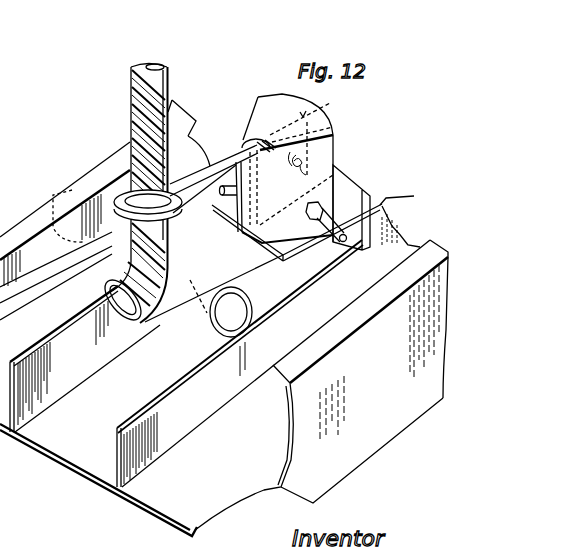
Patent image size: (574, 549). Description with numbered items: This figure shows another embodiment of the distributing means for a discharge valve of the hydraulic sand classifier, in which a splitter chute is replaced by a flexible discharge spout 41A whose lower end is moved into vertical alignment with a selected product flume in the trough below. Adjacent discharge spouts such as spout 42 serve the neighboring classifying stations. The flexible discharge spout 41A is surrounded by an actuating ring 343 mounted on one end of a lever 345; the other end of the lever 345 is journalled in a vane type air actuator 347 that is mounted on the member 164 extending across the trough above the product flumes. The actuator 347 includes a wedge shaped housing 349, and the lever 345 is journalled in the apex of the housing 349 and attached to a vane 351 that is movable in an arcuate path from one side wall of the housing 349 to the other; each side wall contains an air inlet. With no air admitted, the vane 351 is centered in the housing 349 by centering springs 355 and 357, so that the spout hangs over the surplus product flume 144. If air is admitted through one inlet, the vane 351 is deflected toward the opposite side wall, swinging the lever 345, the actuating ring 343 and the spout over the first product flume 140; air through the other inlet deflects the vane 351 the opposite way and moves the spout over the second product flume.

The flexible discharge spout 41A is at (160, 92).
The actuating ring 343 is at (125, 182).
The centering spring 355 is at (260, 118).
The vane type air actuator 347 is at (275, 87).
The vane 351 is at (322, 115).
The centering spring 357 is at (333, 140).
The wedge shaped housing 349 is at (333, 168).
The member 164 is at (353, 200).
The lever 345 is at (238, 288).
The discharge spout 42 is at (47, 289).
The surplus product flume 144 is at (165, 372).
The first product flume 140 is at (250, 451).